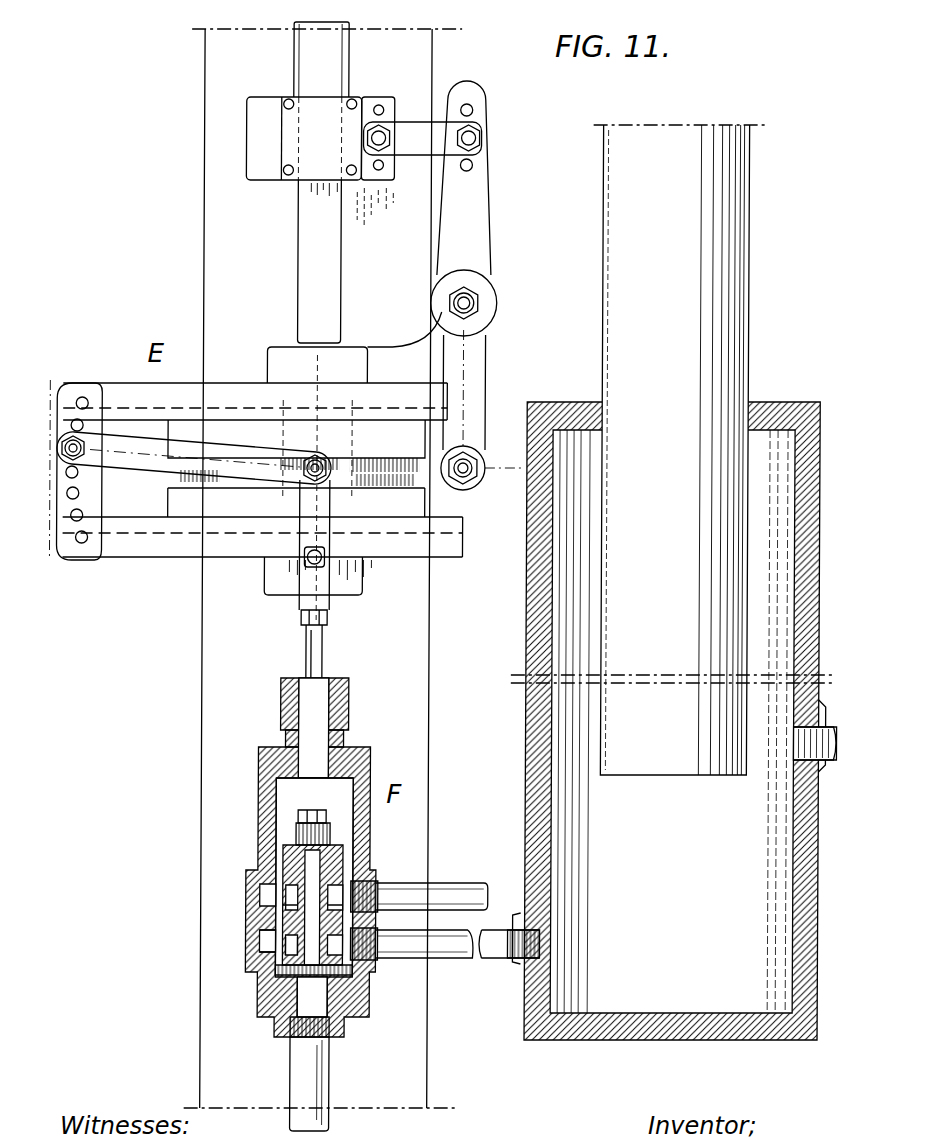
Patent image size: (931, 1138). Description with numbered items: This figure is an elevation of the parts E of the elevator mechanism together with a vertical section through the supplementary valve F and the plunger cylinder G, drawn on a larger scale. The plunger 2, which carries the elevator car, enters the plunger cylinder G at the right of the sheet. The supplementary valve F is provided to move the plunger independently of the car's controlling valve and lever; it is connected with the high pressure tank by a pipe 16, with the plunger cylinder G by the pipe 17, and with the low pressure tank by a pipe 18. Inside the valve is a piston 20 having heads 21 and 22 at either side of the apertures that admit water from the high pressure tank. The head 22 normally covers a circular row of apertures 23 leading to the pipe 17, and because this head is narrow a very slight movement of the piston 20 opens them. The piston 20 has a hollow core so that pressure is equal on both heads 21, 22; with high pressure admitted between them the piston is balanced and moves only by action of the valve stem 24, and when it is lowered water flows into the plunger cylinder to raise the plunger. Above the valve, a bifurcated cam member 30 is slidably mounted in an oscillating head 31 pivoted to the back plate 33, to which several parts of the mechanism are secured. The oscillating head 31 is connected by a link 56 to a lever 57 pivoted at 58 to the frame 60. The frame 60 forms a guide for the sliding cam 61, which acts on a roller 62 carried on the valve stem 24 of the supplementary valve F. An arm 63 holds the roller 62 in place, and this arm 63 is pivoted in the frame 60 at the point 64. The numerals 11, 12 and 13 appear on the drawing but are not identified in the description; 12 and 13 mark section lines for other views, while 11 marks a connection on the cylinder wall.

The plunger 2 is at (677, 450).
The cylinder port 11 is at (829, 763).
The pivot plate 12 is at (508, 490).
The valve stem block 13 is at (318, 360).
The pipe 16 is at (462, 883).
The pipe 17 is at (447, 962).
The pipe 18 is at (333, 1078).
The piston 20 is at (282, 922).
The head 21 is at (268, 866).
The head 22 is at (280, 950).
The apertures 23 is at (268, 938).
The valve stem 24 is at (312, 659).
The bifurcated cam member 30 is at (328, 42).
The oscillating head 31 is at (262, 107).
The back plate 33 is at (212, 98).
The link 56 is at (422, 138).
The lever 57 is at (482, 204).
The pivot 58 is at (478, 298).
The frame 60 is at (393, 356).
The sliding cam 61 is at (296, 468).
The roller 62 is at (322, 458).
The arm 63 is at (194, 458).
The pivot point 64 is at (85, 445).